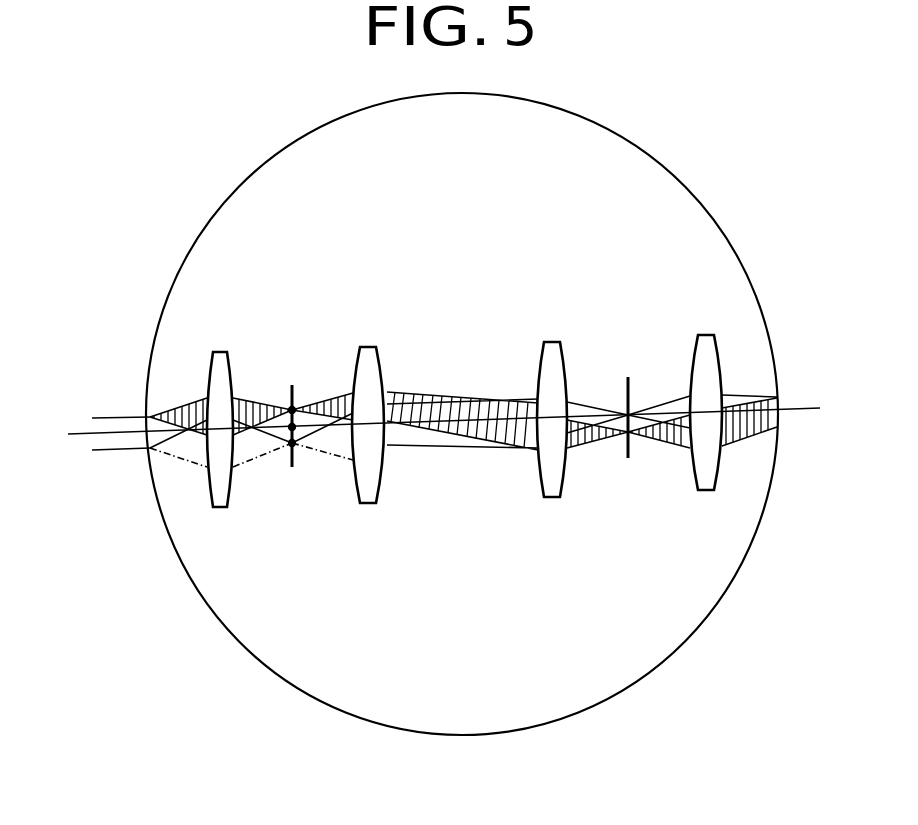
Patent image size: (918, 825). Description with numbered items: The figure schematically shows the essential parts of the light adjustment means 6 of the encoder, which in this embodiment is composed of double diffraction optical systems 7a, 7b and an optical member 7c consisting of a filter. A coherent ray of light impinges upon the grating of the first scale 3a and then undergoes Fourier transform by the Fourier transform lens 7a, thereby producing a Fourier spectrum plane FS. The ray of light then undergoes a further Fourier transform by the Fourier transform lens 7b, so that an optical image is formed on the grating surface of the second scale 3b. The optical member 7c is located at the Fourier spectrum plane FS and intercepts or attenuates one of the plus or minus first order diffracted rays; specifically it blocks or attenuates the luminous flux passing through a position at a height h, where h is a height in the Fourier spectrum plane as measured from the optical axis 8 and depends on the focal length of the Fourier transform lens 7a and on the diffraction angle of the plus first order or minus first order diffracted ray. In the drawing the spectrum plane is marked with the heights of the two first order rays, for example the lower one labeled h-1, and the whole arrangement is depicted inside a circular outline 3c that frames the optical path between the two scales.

The first scale 3a is at (140, 457).
The second scale 3b is at (790, 425).
The spherical wall of integrating sphere 3c is at (710, 213).
The light adjustment means 6 is at (553, 260).
The Fourier transform lens 7a is at (217, 386).
The Fourier transform lens 7b is at (722, 333).
The optical member 7c is at (305, 414).
The optical axis 8 is at (82, 438).
The Fourier spectrum plane FS is at (292, 463).
The lower image height h-1 is at (296, 448).